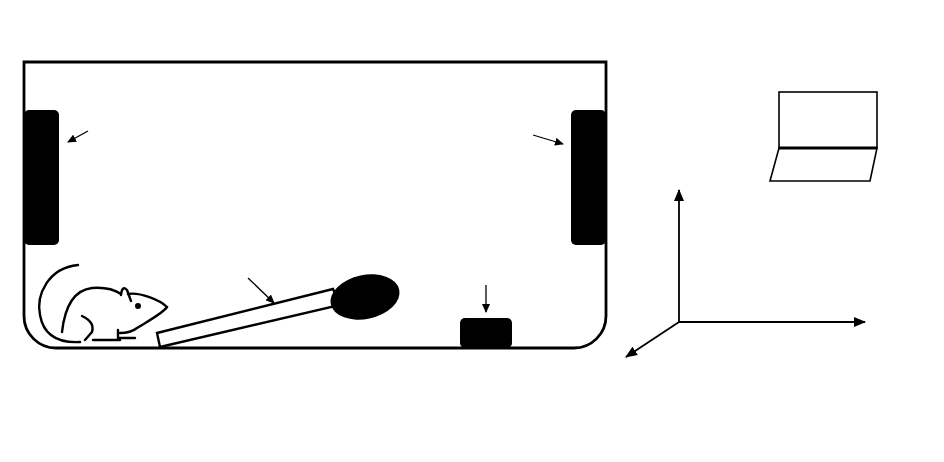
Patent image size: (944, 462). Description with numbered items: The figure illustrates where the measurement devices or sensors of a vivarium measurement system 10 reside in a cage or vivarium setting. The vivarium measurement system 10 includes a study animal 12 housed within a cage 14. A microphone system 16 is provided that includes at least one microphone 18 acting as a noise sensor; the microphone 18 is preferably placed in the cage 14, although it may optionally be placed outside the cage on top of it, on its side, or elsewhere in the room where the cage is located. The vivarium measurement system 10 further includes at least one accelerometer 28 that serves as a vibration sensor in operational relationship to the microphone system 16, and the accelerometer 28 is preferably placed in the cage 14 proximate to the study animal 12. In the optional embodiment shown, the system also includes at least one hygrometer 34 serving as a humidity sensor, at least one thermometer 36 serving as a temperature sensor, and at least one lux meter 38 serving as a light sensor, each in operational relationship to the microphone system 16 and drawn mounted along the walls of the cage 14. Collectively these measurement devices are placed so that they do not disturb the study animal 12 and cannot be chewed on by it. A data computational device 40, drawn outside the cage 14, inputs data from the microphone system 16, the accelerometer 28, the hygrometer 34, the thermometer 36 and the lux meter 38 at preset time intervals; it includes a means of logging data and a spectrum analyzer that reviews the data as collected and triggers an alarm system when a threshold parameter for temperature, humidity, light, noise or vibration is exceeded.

The vivarium measurement system 10 is at (612, 48).
The study animal 12 is at (108, 323).
The cage 14 is at (188, 62).
The microphone system 16 is at (280, 276).
The microphone 18 is at (327, 283).
The accelerometer 28 is at (457, 323).
The hygrometer 34 is at (607, 172).
The thermometer 36 is at (607, 116).
The lux meter 38 is at (58, 205).
The data computational device 40 is at (830, 170).